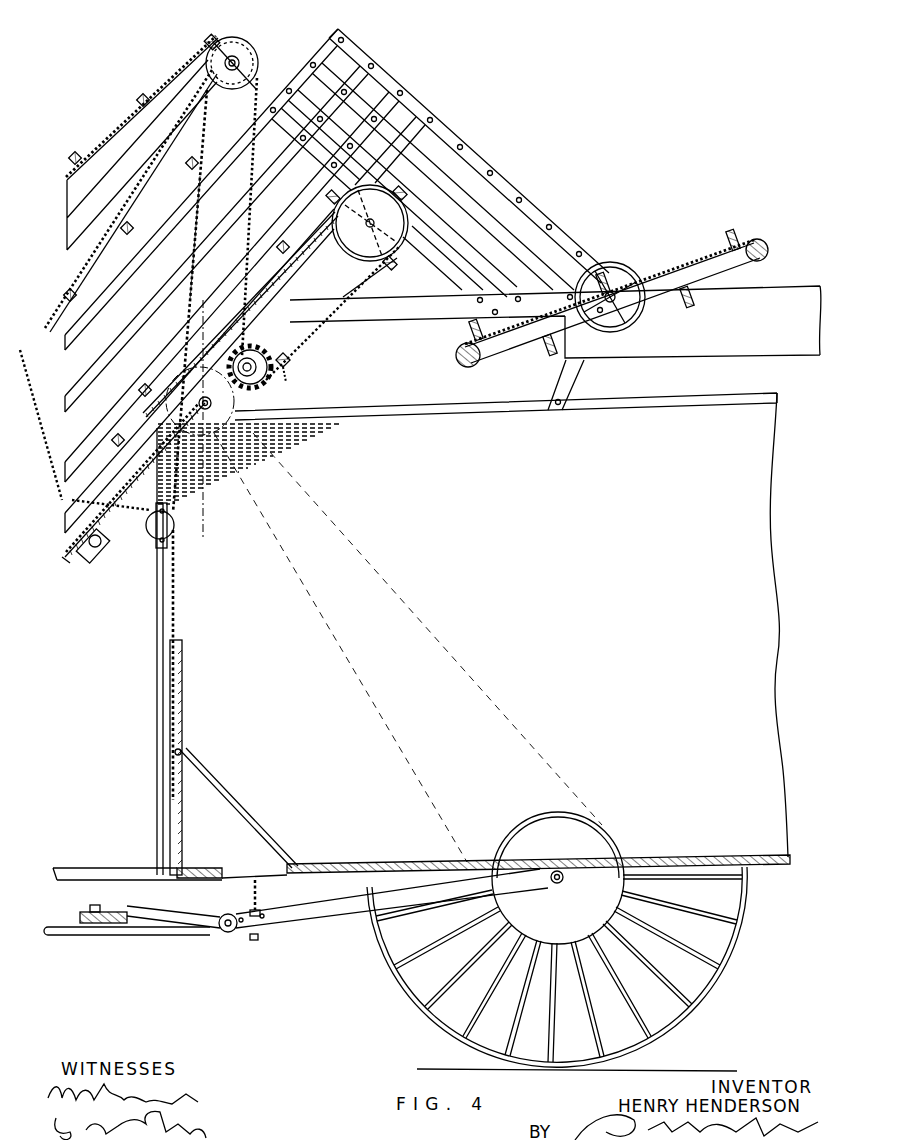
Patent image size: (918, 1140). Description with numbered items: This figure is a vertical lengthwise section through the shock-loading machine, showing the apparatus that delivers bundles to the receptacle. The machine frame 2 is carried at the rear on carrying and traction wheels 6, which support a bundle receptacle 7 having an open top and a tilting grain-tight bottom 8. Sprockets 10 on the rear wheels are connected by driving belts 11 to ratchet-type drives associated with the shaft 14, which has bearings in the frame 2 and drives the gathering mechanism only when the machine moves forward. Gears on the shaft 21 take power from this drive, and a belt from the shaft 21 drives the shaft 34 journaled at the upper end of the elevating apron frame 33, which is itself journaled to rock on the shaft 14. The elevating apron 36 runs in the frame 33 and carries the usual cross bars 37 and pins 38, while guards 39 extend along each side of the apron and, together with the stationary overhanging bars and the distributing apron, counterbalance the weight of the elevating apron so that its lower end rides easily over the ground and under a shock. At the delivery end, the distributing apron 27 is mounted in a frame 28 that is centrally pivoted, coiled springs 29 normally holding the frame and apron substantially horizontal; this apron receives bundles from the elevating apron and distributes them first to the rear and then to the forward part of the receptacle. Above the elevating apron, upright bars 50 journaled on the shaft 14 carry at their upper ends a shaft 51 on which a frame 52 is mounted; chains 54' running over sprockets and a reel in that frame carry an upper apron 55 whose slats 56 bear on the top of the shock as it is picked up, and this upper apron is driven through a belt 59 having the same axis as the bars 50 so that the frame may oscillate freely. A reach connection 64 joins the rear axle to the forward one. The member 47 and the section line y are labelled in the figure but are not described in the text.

The frame 2 is at (97, 868).
The rear carrying and traction wheels 6 is at (735, 950).
The bundle receptacle 7 is at (760, 543).
The tilting grain-tight bottom 8 is at (668, 856).
The sprockets 10 is at (620, 912).
The driving belts 11 is at (490, 905).
The shaft 14 is at (202, 402).
The shaft 21 is at (247, 358).
The apron 27 is at (707, 245).
The frame 28 is at (723, 265).
The coiled springs 29 is at (618, 270).
The elevating apron frame 33 is at (109, 456).
The shaft 34 is at (371, 226).
The elevating apron 36 is at (297, 342).
The cross bars 37 is at (290, 360).
The pins 38 is at (288, 379).
The guards 39 is at (472, 150).
The post 47 is at (160, 580).
The upright bars 50 is at (217, 202).
The shaft 51 is at (240, 63).
The frame 52 is at (133, 146).
The chains 54' is at (249, 49).
The apron 55 is at (198, 78).
The slats 56 is at (205, 42).
The belt 59 is at (151, 472).
The reach connection 64 is at (185, 933).
The section line y is at (199, 421).